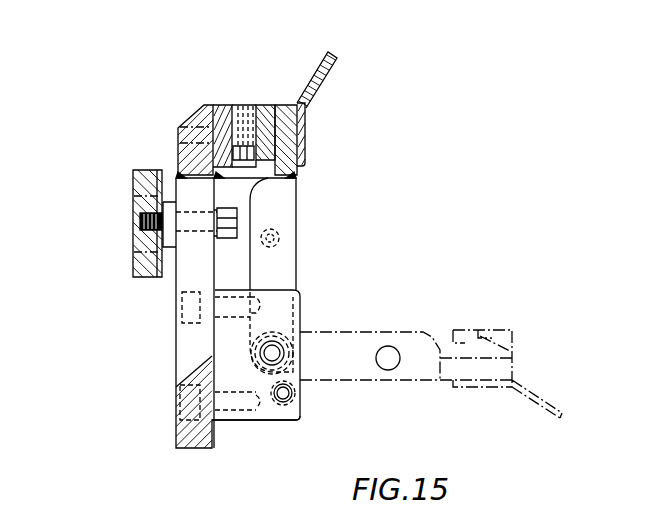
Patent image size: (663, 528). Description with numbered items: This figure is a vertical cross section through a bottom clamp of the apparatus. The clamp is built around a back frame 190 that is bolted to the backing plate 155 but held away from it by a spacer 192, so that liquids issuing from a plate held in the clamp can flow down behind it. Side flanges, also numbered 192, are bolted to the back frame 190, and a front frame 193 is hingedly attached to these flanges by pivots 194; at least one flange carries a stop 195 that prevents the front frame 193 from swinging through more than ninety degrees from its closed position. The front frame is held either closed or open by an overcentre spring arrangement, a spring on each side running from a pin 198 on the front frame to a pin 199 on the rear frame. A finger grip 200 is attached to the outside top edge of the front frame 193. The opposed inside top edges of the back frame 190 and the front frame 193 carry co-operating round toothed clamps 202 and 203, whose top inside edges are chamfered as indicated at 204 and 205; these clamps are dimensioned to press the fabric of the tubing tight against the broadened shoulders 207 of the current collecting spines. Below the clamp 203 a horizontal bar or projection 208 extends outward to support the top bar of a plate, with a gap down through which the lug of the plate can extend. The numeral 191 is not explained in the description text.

The backing plate 155 is at (160, 176).
The back frame 190 is at (203, 113).
The mounting plate 191 is at (172, 255).
The spacer 192 is at (276, 421).
The front frame 193 is at (298, 240).
The pivots 194 is at (281, 350).
The stop 195 is at (300, 396).
The pin 198 is at (283, 248).
The pin 199 is at (175, 427).
The finger grip 200 is at (334, 63).
The round toothed clamp 202 is at (305, 113).
The round toothed clamp 203 is at (228, 104).
The chamfer 204 is at (262, 103).
The chamfer 205 is at (236, 103).
The broadened shoulders 207 is at (305, 145).
The horizontal bar or projection 208 is at (252, 185).